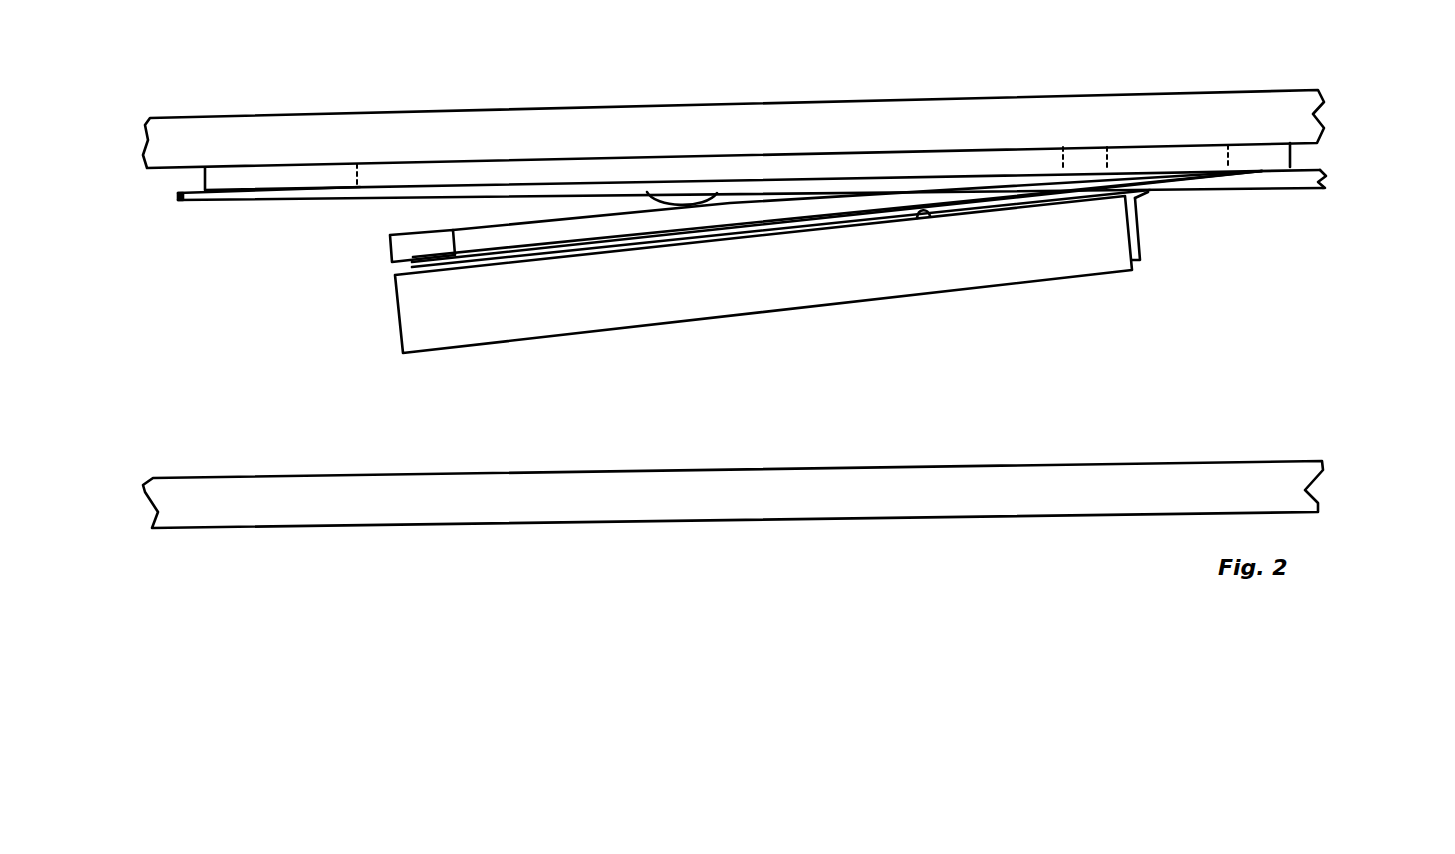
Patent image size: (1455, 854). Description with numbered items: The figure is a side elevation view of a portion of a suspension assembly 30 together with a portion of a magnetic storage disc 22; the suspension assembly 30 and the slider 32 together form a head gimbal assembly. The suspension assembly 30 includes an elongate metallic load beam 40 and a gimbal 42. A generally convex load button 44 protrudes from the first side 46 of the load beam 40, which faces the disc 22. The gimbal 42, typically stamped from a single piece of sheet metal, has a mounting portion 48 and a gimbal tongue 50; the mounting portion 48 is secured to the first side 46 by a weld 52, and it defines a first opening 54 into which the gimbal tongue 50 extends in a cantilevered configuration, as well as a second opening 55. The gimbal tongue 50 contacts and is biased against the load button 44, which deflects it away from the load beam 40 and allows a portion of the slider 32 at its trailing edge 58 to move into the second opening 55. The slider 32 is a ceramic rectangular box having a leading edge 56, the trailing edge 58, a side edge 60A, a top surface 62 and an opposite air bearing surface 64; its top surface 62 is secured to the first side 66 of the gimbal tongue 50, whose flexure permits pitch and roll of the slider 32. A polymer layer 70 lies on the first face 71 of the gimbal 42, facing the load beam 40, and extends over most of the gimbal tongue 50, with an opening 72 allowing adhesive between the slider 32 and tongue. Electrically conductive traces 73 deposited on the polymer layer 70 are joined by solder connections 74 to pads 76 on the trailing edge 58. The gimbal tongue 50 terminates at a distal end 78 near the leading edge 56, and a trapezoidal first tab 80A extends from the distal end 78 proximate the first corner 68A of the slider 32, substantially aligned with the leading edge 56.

The disc 22 is at (1160, 480).
The suspension assembly 30 is at (1332, 185).
The slider 32 is at (741, 292).
The load beam 40 is at (252, 137).
The gimbal 42 is at (232, 192).
The load button 44 is at (653, 204).
The first side 46 is at (162, 170).
The mounting portion 48 is at (271, 180).
The gimbal tongue 50 is at (543, 223).
The weld 52 is at (330, 160).
The first opening 54 is at (435, 172).
The second opening 55 is at (1168, 158).
The leading edge 56 is at (400, 335).
The trailing edge 58 is at (1137, 265).
The side edge 60A is at (837, 290).
The top surface 62 is at (930, 217).
The air bearing surface 64 is at (610, 334).
The first side 66 is at (627, 240).
The first corner 68A is at (392, 276).
The polymer layer 70 is at (176, 196).
The first face 71 is at (1265, 171).
The opening 72 is at (743, 228).
The traces 73 is at (1203, 189).
The solder connections 74 is at (1140, 242).
The pads 76 is at (1142, 252).
The distal end 78 is at (390, 245).
The first tab 80A is at (433, 243).